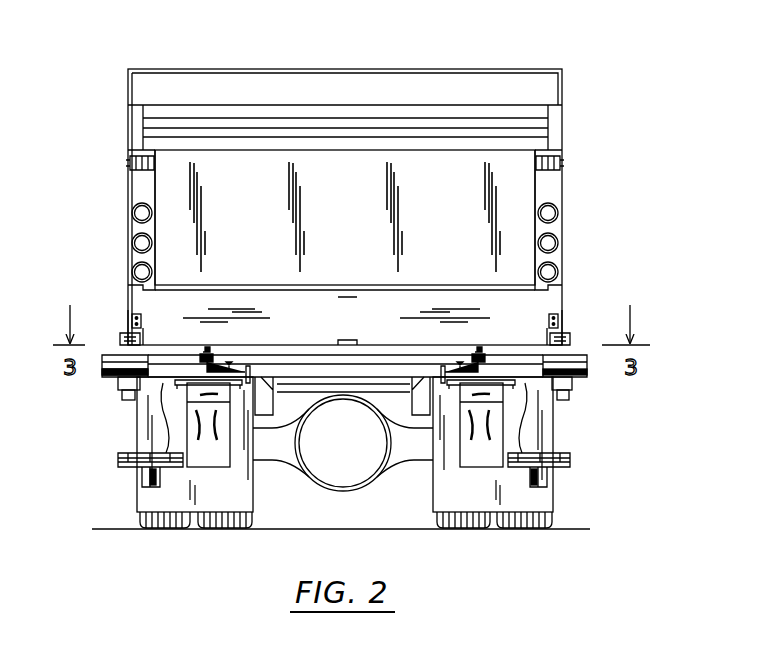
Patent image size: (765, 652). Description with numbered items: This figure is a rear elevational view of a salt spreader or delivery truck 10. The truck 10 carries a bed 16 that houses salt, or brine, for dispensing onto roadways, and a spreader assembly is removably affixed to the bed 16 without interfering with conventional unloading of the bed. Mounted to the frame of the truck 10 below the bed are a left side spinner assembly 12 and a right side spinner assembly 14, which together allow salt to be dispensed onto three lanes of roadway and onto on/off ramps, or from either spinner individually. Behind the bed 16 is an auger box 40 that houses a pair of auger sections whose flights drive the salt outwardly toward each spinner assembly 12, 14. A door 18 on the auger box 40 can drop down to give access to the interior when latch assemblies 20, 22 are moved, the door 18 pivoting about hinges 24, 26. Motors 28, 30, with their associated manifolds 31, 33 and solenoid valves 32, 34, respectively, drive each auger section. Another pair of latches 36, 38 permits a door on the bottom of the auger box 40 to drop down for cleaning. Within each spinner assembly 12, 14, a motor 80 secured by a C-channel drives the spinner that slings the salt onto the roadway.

The salt spreader or delivery truck 10 is at (60, 99).
The left side spinner assembly 12 is at (110, 458).
The right side spinner assembly 14 is at (576, 458).
The bed 16 is at (572, 139).
The door 18 is at (431, 290).
The latch assembly 20 is at (146, 320).
The latch assembly 22 is at (549, 320).
The hinge 24 is at (567, 341).
The hinge 26 is at (124, 339).
The motor 28 is at (584, 377).
The motor 30 is at (106, 377).
The manifold 31 is at (570, 385).
The solenoid valve 32 is at (566, 400).
The manifold 33 is at (119, 385).
The solenoid valve 34 is at (126, 400).
The latch 36 is at (240, 370).
The latch 38 is at (455, 370).
The auger box 40 is at (319, 350).
The motor 80 is at (150, 483).